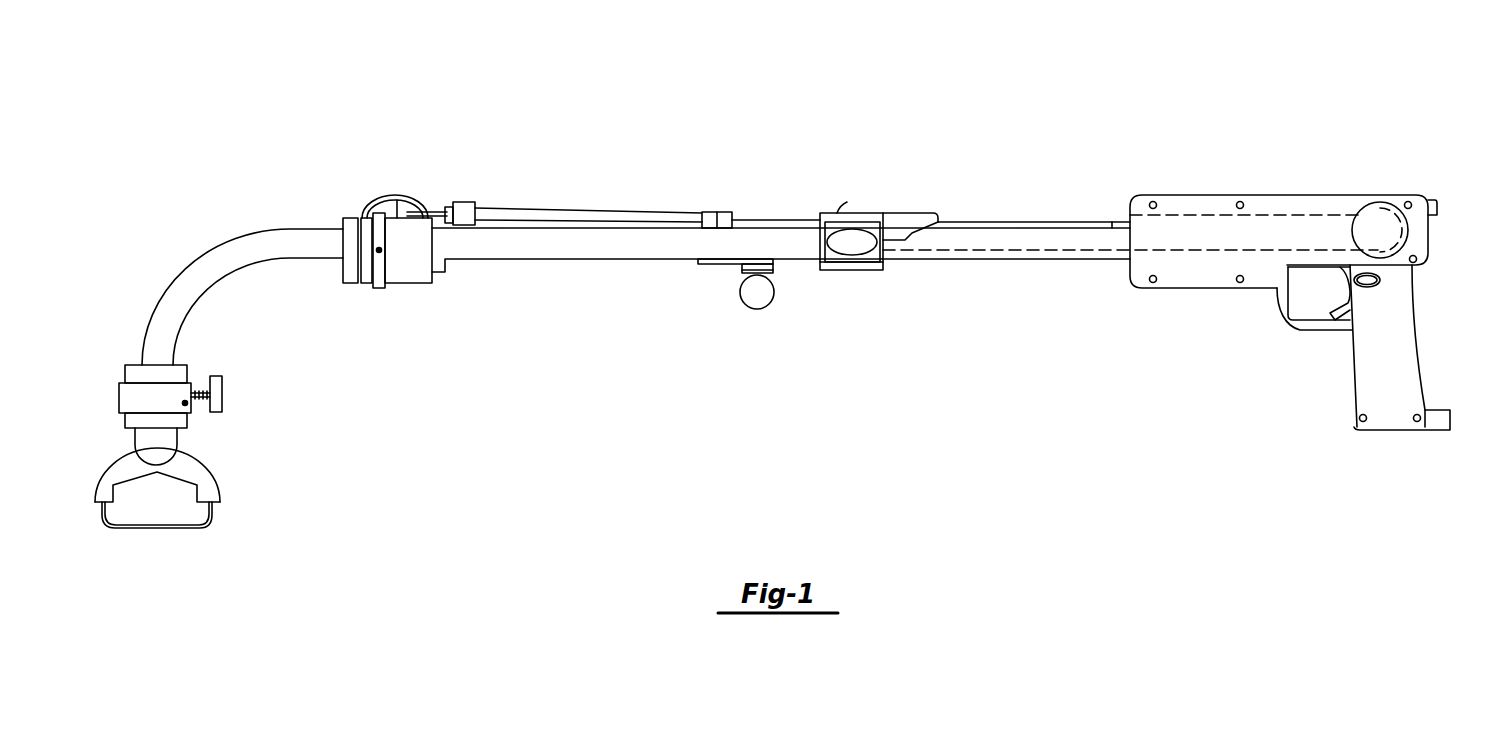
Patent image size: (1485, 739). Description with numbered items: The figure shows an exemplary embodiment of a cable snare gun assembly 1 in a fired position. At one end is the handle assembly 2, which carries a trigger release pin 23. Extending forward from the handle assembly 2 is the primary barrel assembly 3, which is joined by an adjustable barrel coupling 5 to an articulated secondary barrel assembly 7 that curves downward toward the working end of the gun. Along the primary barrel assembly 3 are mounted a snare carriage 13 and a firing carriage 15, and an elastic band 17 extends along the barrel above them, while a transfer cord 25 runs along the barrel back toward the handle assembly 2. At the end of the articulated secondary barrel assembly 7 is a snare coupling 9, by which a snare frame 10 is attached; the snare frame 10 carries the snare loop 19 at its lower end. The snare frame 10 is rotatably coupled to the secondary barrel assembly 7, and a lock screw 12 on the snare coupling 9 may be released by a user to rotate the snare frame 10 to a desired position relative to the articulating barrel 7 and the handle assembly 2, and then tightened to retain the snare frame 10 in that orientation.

The snare gun assembly 1 is at (1357, 61).
The handle assembly 2 is at (1308, 205).
The primary barrel assembly 3 is at (988, 243).
The adjustable barrel coupling 5 is at (412, 284).
The articulated secondary barrel assembly 7 is at (261, 247).
The snare coupling 9 is at (135, 375).
The snare frame 10 is at (205, 477).
The lock screw 12 is at (222, 390).
The snare carriage 13 is at (760, 297).
The firing carriage 15 is at (884, 213).
The elastic band 17 is at (548, 215).
The snare loop 19 is at (157, 530).
The trigger release pin 23 is at (1112, 222).
The transfer cord 25 is at (1030, 218).